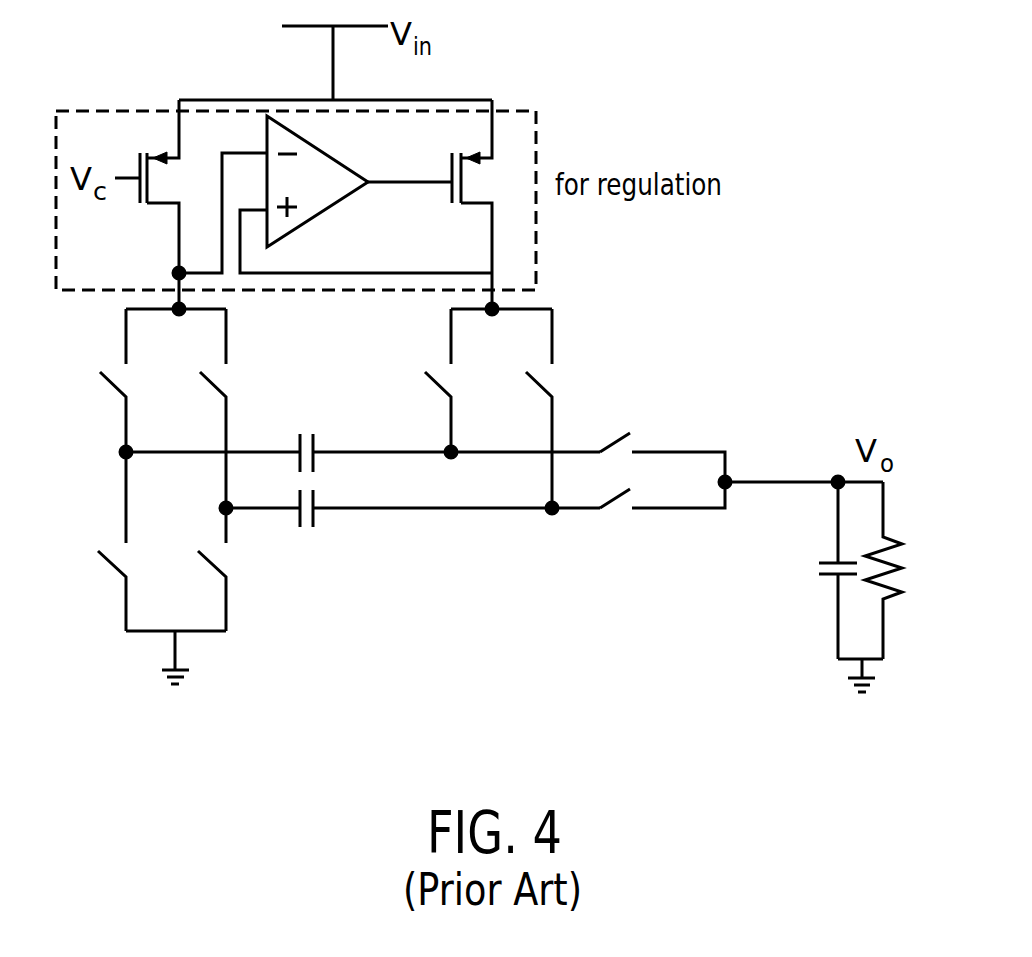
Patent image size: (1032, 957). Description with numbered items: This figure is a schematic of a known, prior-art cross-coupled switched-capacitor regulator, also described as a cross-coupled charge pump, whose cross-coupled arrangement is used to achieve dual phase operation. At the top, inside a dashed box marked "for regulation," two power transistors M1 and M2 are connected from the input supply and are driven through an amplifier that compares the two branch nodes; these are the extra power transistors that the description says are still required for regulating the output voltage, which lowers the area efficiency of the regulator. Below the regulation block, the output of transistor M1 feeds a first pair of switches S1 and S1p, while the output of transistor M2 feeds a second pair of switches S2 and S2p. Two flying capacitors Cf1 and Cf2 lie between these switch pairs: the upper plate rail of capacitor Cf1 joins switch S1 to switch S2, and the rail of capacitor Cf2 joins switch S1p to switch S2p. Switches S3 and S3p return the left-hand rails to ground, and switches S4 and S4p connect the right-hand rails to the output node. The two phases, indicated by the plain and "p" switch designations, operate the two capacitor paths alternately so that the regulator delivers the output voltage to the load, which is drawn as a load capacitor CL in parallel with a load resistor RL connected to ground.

The first PMOS transistor M1 is at (167, 204).
The second PMOS transistor M2 is at (481, 204).
The switch S1 is at (98, 380).
The switch S1p is at (245, 408).
The switch S2 is at (417, 380).
The switch S2p is at (567, 408).
The switch S3 is at (97, 541).
The switch S3p is at (243, 569).
The switch S4 is at (662, 447).
The switch S4p is at (662, 521).
The flying capacitor Cf1 is at (363, 432).
The flying capacitor Cf2 is at (413, 530).
The load capacitor CL is at (821, 570).
The load resistor RL is at (905, 570).